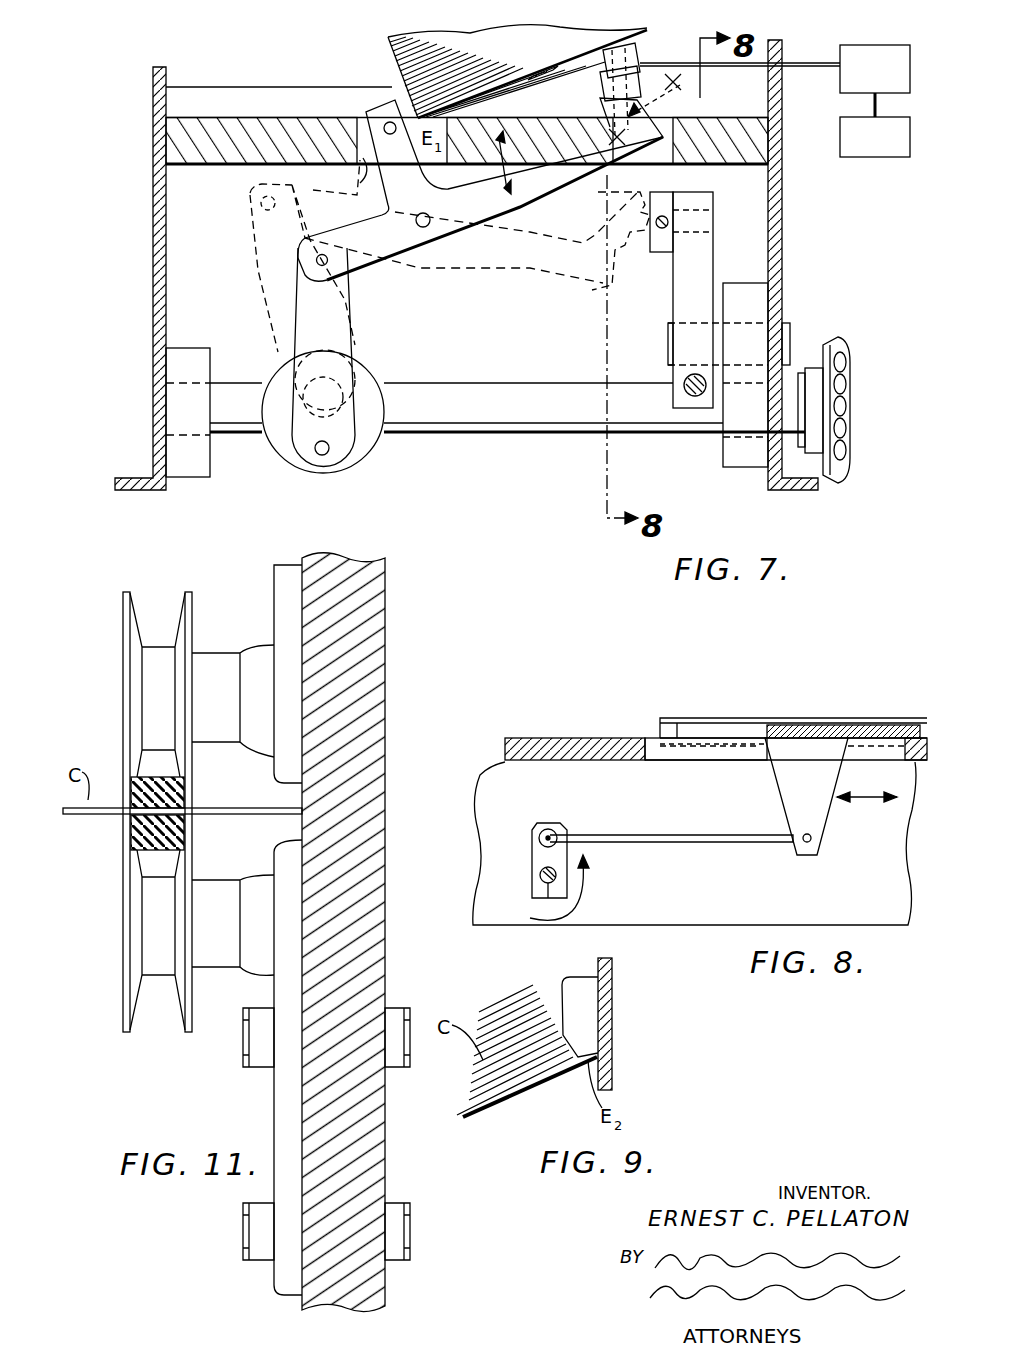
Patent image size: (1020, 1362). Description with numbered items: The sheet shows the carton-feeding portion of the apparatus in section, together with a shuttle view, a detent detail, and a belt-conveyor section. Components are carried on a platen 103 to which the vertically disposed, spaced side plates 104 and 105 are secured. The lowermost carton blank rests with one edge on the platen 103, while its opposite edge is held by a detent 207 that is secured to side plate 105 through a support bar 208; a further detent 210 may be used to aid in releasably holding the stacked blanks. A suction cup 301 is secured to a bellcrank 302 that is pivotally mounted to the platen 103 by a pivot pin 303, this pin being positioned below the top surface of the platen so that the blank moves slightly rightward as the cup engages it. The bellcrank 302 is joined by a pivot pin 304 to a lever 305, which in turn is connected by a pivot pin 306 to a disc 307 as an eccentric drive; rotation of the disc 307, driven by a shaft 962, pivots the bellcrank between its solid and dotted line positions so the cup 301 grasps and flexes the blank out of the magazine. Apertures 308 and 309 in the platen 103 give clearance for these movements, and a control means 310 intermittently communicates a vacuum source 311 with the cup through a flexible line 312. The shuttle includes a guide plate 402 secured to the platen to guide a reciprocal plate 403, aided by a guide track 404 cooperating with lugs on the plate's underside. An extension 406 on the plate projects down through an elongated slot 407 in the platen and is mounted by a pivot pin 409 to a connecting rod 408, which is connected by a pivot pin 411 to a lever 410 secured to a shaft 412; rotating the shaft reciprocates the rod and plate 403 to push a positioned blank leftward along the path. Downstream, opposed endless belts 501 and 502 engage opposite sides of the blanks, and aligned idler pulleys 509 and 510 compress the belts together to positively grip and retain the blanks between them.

In FIG. 7, the platen 103 is at (262, 130).
In FIG. 7, the side plate 104 is at (153, 268).
In FIG. 7, the side plate 105 is at (782, 245).
In FIG. 11, the side plate 105 is at (386, 640).
In FIG. 9, the side plate 105 is at (612, 970).
In FIG. 7, the detent 210 is at (541, 80).
In FIG. 7, the suction cup 301 is at (630, 40).
In FIG. 7, the bellcrank 302 is at (410, 240).
In FIG. 7, the pivot pin 303 is at (390, 120).
In FIG. 7, the pivot pin 304 is at (316, 262).
In FIG. 7, the lever 305 is at (298, 318).
In FIG. 7, the pivot pin 306 is at (329, 450).
In FIG. 7, the disc 307 is at (283, 425).
In FIG. 7, the aperture 308 is at (358, 173).
In FIG. 7, the aperture 309 is at (660, 185).
In FIG. 7, the control means 310 is at (875, 69).
In FIG. 7, the vacuum source 311 is at (875, 125).
In FIG. 7, the flexible line 312 is at (783, 67).
In FIG. 7, the shaft 962 is at (383, 372).
In FIG. 8, the guide plate 402 is at (670, 718).
In FIG. 8, the reciprocal plate 403 is at (842, 725).
In FIG. 8, the guide track 404 is at (660, 746).
In FIG. 8, the extension 406 is at (798, 800).
In FIG. 8, the elongated slot 407 is at (757, 750).
In FIG. 8, the connecting rod 408 is at (782, 843).
In FIG. 8, the pivot pin 409 is at (812, 840).
In FIG. 8, the lever 410 is at (540, 855).
In FIG. 8, the pivot pin 411 is at (557, 830).
In FIG. 8, the shaft 412 is at (557, 876).
In FIG. 11, the endless belt 501 is at (183, 790).
In FIG. 11, the endless belt 502 is at (130, 840).
In FIG. 11, the idler pulley 509 is at (125, 745).
In FIG. 11, the idler pulley 510 is at (125, 943).
In FIG. 9, the detent 207 is at (567, 1068).
In FIG. 9, the support bar 208 is at (590, 1013).